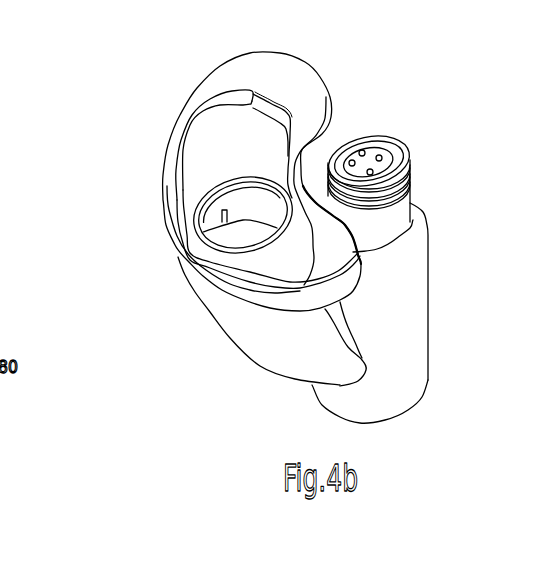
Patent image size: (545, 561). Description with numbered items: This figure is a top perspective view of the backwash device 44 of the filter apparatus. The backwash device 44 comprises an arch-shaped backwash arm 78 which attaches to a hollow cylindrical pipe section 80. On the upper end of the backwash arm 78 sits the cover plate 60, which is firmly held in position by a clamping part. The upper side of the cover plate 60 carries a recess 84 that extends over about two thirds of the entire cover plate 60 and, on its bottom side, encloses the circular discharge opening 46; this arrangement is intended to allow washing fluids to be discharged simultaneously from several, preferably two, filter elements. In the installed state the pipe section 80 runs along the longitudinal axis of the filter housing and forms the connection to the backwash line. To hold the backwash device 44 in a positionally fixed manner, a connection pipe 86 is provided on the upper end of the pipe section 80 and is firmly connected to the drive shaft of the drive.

The backwash device 44 is at (407, 113).
The discharge opening 46 is at (233, 238).
The cover plate 60 is at (300, 78).
The backwash arm 78 is at (243, 342).
The pipe section 80 is at (410, 315).
The recess 84 is at (200, 172).
The connection pipe 86 is at (397, 210).